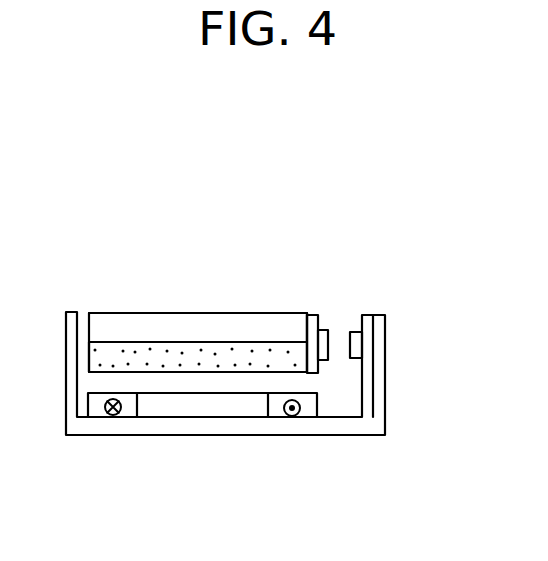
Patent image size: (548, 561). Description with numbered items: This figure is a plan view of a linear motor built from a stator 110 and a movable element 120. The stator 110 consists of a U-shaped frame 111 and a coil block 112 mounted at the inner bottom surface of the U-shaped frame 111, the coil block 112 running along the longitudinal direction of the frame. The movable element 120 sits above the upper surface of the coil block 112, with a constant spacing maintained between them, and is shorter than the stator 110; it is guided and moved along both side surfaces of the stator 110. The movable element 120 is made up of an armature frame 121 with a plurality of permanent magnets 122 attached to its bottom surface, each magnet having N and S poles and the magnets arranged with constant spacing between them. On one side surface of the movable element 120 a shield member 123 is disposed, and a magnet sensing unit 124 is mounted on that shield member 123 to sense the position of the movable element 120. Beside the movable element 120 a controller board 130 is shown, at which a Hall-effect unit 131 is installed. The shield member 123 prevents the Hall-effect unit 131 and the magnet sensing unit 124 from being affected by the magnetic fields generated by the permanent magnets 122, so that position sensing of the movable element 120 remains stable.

The stator 110 is at (132, 445).
The U-shaped frame 111 is at (285, 417).
The coil block 112 is at (205, 410).
The movable element 120 is at (185, 300).
The armature frame 121 is at (238, 325).
The permanent magnets 122 is at (110, 362).
The shield member 123 is at (313, 323).
The magnet sensing unit 124 is at (327, 343).
The controller board 130 is at (367, 317).
The Hall-effect unit 131 is at (356, 353).